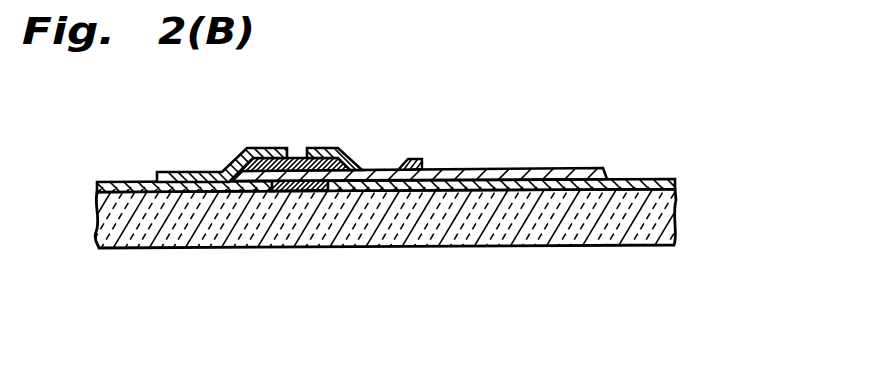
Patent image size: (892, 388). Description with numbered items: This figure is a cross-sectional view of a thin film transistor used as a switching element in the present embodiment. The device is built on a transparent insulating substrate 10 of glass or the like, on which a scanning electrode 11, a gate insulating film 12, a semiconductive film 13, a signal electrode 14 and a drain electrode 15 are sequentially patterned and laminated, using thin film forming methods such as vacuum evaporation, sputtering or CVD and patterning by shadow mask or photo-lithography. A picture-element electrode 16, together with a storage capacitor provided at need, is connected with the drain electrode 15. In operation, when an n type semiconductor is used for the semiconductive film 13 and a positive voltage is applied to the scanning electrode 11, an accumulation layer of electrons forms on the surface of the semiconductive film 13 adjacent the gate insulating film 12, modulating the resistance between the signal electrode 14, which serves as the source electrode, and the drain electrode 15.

The transparent insulating substrate 10 is at (542, 227).
The scanning electrode 11 is at (303, 193).
The gate insulating film 12 is at (673, 180).
The semiconductive film 13 is at (298, 156).
The signal electrode 14 is at (247, 150).
The drain electrode 15 is at (347, 148).
The picture-element electrode 16 is at (525, 168).